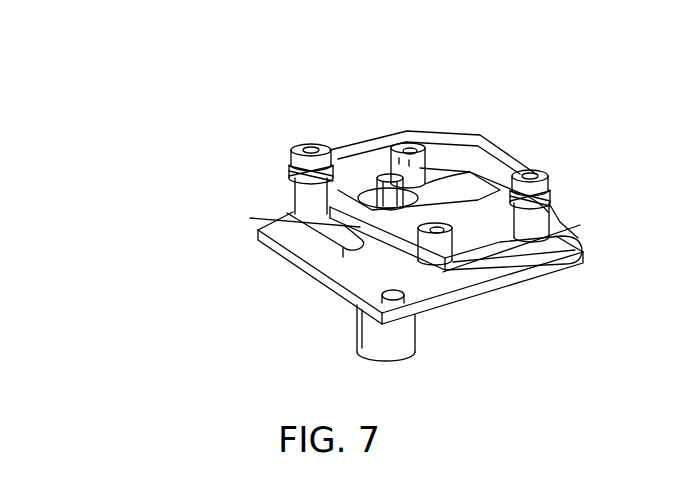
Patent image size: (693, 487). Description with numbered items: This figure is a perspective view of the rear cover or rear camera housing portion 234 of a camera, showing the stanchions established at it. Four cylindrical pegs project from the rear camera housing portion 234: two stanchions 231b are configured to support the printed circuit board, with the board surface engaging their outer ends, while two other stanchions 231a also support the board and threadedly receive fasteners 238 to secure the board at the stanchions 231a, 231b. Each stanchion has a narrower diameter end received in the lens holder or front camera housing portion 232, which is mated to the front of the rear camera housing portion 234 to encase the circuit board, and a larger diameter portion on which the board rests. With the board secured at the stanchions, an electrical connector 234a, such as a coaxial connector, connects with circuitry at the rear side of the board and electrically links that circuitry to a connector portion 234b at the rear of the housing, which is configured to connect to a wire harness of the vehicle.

The rear camera housing portion 234 is at (330, 272).
The electrical connector 234a is at (390, 176).
The connector portion 234b is at (400, 330).
The stanchions 231a is at (320, 211).
The stanchions 231b is at (428, 221).
The fastener 238 is at (540, 176).
The front camera housing portion 232 is at (552, 481).